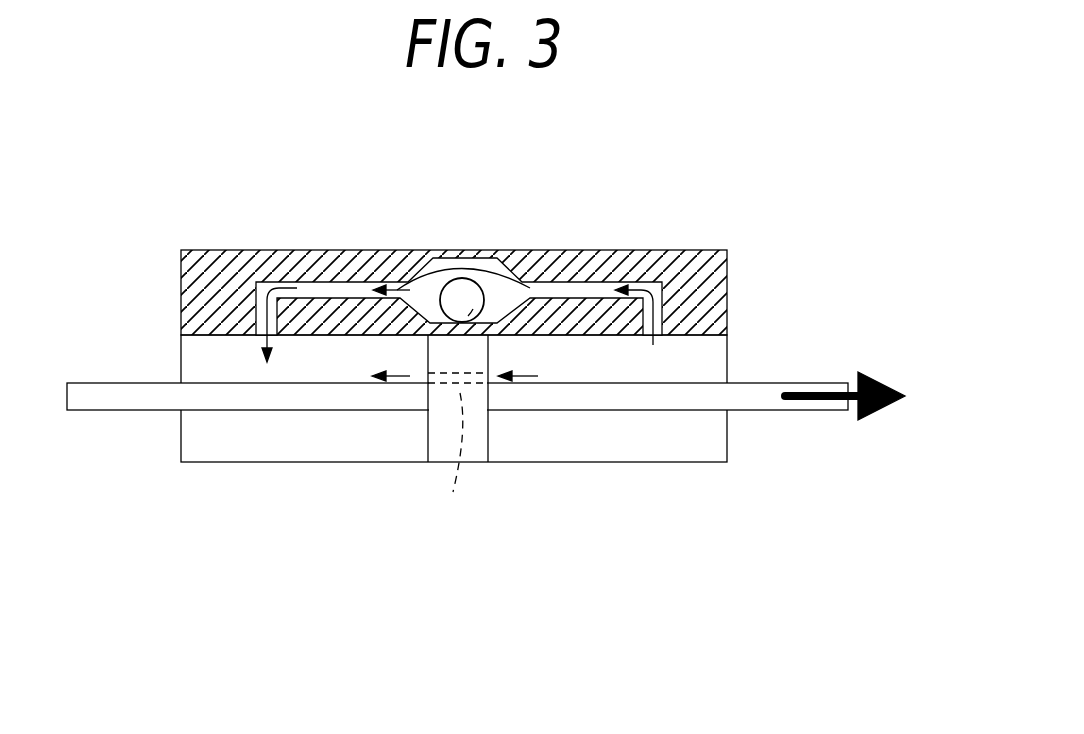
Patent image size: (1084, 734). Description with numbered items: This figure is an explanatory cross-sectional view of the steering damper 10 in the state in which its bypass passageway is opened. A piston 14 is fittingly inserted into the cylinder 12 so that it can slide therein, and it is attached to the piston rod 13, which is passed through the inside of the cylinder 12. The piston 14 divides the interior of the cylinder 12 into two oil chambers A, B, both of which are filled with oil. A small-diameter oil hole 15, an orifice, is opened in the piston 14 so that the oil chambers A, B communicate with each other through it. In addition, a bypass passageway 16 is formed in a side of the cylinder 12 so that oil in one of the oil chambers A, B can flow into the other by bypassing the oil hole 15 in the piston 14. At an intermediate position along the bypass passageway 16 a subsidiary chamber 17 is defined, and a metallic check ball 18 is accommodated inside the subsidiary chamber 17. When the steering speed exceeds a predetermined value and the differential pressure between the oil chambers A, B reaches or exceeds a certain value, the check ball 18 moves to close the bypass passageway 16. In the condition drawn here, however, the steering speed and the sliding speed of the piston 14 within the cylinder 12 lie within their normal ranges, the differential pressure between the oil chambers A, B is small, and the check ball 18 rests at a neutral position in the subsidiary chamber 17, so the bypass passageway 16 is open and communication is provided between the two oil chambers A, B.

The steering damper 10 is at (753, 234).
The cylinder 12 is at (727, 440).
The piston rod 13 is at (122, 383).
The piston 14 is at (490, 440).
The oil hole 15 is at (458, 462).
The bypass passageway 16 is at (580, 288).
The subsidiary chamber 17 is at (428, 262).
The metallic check ball 18 is at (462, 283).
The oil chamber A is at (680, 452).
The oil chamber B is at (299, 450).